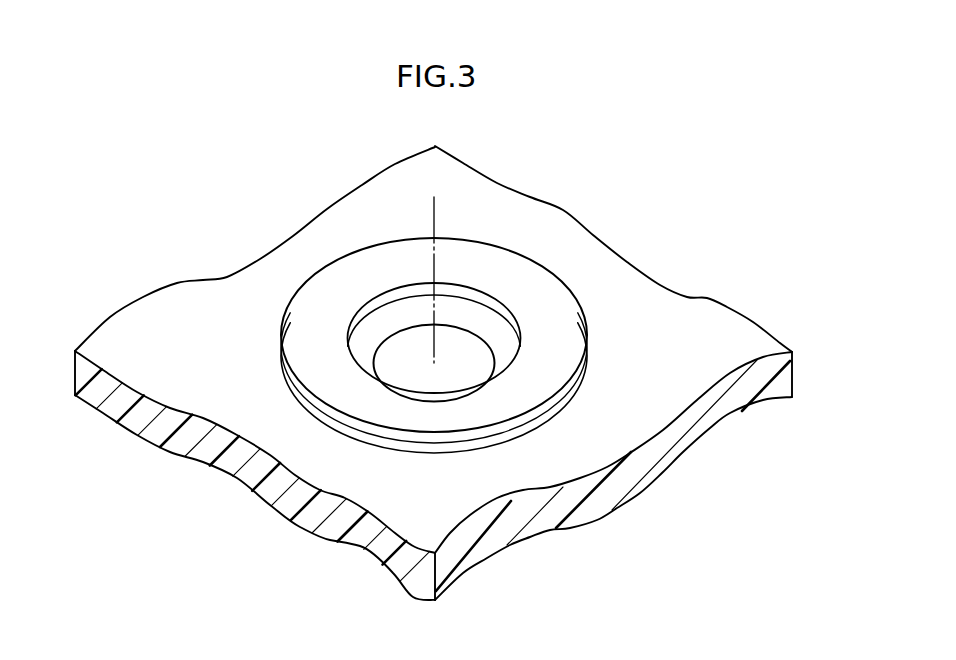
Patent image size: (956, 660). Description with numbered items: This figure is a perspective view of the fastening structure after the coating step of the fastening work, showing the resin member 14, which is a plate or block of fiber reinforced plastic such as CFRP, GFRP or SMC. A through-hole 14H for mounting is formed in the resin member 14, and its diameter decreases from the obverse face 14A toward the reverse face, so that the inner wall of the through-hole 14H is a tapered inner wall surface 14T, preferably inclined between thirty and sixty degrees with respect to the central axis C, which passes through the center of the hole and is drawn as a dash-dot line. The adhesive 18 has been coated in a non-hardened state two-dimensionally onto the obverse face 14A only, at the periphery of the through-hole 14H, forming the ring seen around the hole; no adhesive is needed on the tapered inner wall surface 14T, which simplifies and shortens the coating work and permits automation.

The resin member 14 is at (558, 232).
The obverse face 14A is at (197, 294).
The tapered inner wall surface 14T is at (382, 330).
The through-hole for mounting 14H is at (484, 370).
The adhesive 18 is at (540, 366).
The central axis C is at (435, 217).